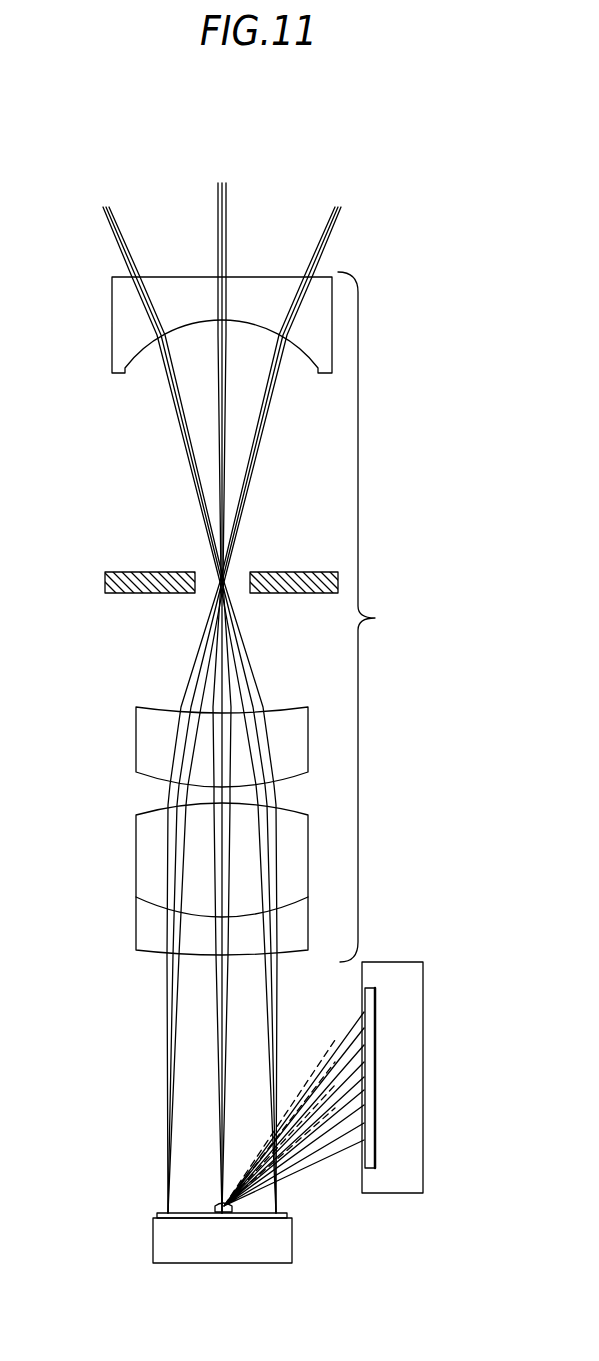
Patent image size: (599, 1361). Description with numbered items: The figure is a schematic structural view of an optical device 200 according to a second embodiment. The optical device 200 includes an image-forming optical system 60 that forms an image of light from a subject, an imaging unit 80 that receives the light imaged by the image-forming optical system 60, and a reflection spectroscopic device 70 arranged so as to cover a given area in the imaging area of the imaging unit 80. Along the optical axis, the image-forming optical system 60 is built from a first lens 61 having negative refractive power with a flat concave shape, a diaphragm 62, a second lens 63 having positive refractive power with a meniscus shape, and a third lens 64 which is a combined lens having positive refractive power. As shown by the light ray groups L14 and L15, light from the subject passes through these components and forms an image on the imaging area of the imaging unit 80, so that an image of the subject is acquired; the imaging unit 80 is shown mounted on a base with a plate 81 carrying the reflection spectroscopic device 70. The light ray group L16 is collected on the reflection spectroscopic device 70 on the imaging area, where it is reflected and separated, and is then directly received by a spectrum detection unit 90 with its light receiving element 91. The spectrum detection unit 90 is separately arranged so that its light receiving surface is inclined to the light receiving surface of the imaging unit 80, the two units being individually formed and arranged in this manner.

The optical device 200 is at (493, 171).
The image-forming optical system 60 is at (372, 617).
The first lens 61 is at (118, 321).
The diaphragm 62 is at (105, 578).
The second lens 63 is at (140, 738).
The third lens 64 is at (136, 869).
The reflection spectroscopic device 70 is at (221, 1207).
The imaging unit 80 is at (237, 1263).
The substrate 81 is at (190, 1218).
The spectrum detection unit 90 is at (423, 978).
The light receiving element 91 is at (375, 1141).
The light ray group L14 is at (272, 693).
The light ray group L15 is at (173, 692).
The light ray group L16 is at (222, 674).